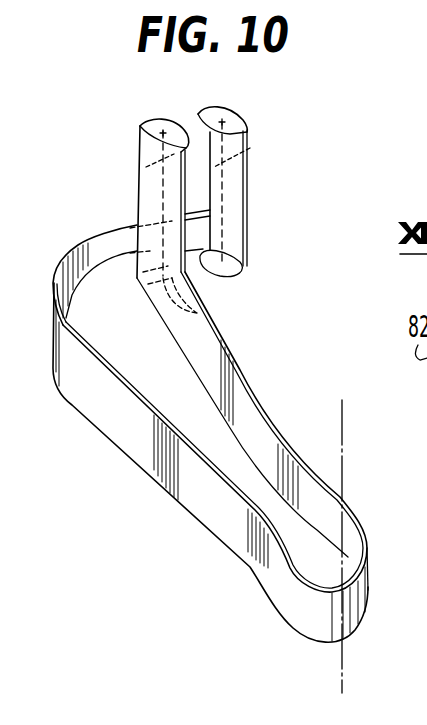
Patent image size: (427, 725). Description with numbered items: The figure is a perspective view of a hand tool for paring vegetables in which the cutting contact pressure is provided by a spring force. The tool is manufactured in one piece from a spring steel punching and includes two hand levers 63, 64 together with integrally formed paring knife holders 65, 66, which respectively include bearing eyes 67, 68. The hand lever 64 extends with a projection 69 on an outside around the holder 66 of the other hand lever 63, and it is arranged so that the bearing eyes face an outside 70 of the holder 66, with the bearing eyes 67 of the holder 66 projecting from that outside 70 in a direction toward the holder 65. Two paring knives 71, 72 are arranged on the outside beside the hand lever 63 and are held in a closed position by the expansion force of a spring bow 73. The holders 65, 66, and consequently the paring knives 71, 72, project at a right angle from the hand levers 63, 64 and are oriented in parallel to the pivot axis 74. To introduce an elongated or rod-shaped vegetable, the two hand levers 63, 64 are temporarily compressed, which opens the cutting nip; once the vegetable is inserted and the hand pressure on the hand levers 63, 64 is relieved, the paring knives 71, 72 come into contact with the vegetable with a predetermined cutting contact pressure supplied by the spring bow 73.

The hand lever 63 is at (242, 392).
The hand lever 64 is at (155, 458).
The paring knife holder 65 is at (248, 241).
The paring knife holder 66 is at (146, 203).
The bearing eye 67 is at (164, 125).
The bearing eye 68 is at (229, 121).
The projection 69 is at (111, 247).
The outside of the holder 70 is at (190, 204).
The paring knife 71 is at (146, 166).
The paring knife 72 is at (250, 148).
The spring bow 73 is at (361, 589).
The pivot axis 74 is at (340, 436).